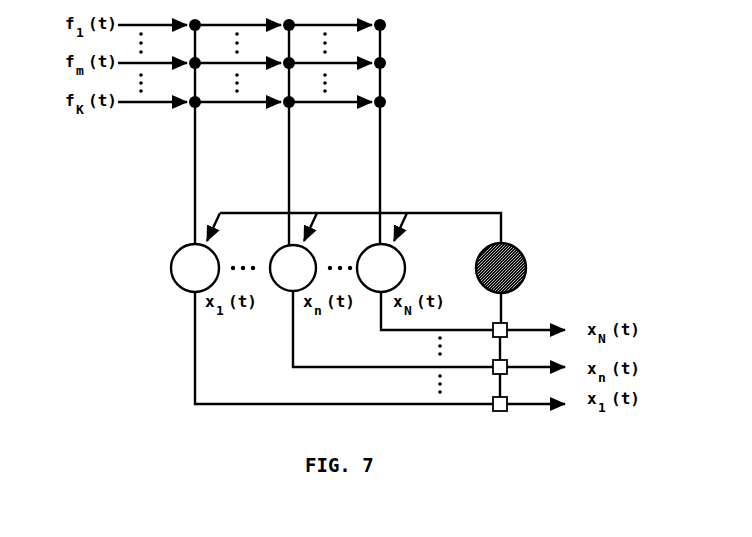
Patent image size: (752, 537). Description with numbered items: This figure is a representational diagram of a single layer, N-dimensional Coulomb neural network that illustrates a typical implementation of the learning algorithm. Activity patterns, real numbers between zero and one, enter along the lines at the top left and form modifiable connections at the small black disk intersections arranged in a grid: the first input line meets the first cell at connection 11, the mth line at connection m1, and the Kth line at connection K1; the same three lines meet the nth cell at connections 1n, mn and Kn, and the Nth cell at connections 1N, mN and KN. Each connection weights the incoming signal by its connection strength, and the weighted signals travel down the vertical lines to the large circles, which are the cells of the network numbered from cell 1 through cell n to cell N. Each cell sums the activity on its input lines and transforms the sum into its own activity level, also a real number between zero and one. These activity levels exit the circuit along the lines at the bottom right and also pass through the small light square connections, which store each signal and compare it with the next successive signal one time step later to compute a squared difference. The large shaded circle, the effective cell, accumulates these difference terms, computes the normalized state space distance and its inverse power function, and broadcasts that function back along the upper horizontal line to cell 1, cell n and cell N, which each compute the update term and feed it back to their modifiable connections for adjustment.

The first cell 1 is at (195, 268).
The nth cell n is at (293, 268).
The Nth cell N is at (381, 268).
The modifiable connection omega 11 is at (213, 19).
The modifiable connection omega m1 is at (213, 57).
The modifiable connection omega K1 is at (213, 96).
The modifiable connection omega 1n is at (308, 19).
The modifiable connection omega mn is at (308, 57).
The modifiable connection omega Kn is at (308, 96).
The modifiable connection omega 1N is at (401, 19).
The modifiable connection omega mN is at (401, 57).
The modifiable connection omega KN is at (401, 96).